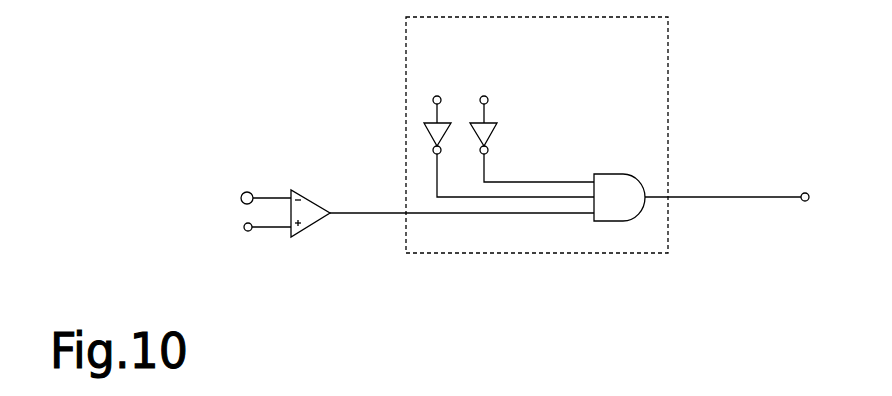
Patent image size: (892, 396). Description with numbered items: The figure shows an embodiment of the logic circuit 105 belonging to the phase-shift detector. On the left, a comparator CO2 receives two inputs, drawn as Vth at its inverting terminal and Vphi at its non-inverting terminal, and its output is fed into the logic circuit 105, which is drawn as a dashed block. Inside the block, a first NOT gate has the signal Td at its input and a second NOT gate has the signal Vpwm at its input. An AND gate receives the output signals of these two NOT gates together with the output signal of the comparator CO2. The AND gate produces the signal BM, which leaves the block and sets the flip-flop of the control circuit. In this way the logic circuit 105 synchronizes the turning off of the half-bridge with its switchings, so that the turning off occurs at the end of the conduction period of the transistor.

The logic circuit 105 is at (404, 60).
The comparator CO2 is at (442, 229).
The signal Td is at (506, 131).
The signal Vpwm is at (532, 123).
The signal BM is at (701, 186).
The threshold voltage input Vth is at (237, 187).
The phase voltage input Vphi is at (236, 229).